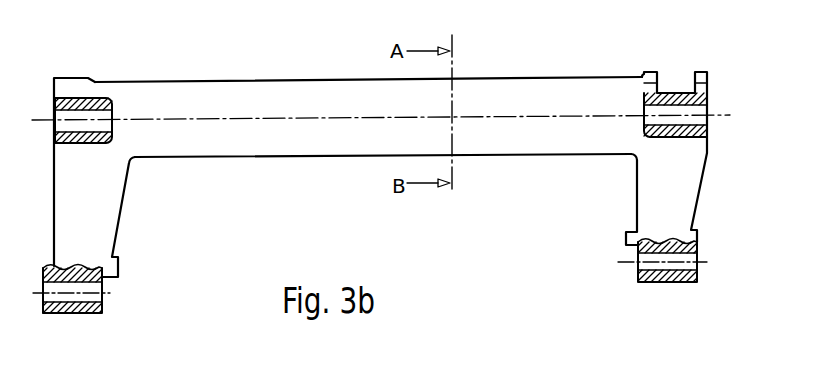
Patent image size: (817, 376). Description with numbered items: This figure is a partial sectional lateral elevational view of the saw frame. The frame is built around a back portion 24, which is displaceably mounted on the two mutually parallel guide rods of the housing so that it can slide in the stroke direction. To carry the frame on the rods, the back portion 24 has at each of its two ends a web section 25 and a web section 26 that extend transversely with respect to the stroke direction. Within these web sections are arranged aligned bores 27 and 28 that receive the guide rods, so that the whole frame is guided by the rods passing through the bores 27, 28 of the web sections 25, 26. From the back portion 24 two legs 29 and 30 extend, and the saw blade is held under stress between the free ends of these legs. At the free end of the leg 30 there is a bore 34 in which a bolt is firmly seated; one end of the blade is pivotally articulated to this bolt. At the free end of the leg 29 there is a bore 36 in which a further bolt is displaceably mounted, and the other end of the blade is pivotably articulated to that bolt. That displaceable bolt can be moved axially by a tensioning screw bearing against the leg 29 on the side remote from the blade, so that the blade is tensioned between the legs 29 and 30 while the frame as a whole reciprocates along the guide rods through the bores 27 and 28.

The back portion of the saw frame 24 is at (220, 130).
The web section 25 is at (110, 138).
The web section 26 is at (667, 137).
The bore 27 is at (74, 128).
The bore 28 is at (683, 115).
The leg 29 is at (100, 222).
The leg 30 is at (680, 190).
The bore 34 is at (673, 282).
The bore 36 is at (78, 315).